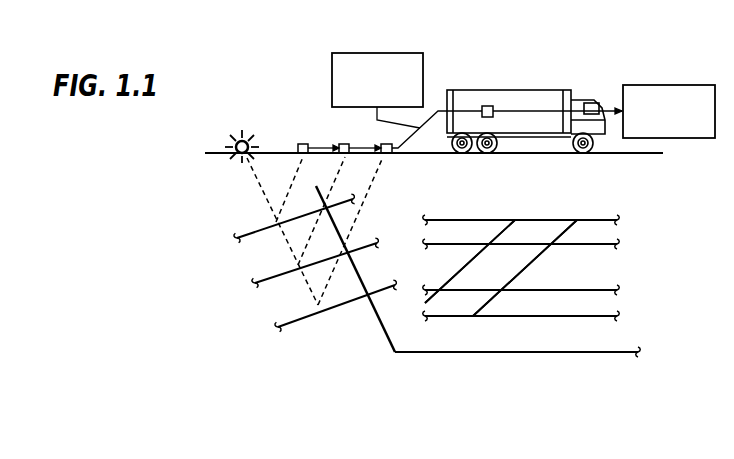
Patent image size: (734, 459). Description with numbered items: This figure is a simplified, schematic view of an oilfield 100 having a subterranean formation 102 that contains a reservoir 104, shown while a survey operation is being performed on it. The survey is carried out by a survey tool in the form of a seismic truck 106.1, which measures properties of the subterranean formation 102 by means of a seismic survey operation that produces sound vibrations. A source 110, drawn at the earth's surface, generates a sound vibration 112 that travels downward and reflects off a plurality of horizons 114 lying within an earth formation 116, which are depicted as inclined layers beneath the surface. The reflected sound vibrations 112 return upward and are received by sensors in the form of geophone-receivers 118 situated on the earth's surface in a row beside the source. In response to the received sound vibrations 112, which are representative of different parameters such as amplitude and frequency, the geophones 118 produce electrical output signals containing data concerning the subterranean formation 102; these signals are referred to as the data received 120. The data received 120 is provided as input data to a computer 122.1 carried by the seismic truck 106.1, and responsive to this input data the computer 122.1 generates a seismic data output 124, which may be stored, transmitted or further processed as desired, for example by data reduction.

The oilfield 100 is at (655, 63).
The subterranean formation 102 is at (592, 219).
The reservoir 104 is at (597, 276).
The seismic truck 106.1 is at (563, 90).
The source 110 is at (237, 139).
The sound vibration 112 is at (288, 193).
The horizons 114 is at (245, 232).
The earth formation 116 is at (381, 323).
The geophone-receivers 118 is at (386, 144).
The data received 120 is at (361, 52).
The computer 122.1 is at (492, 107).
The seismic data output 124 is at (680, 85).